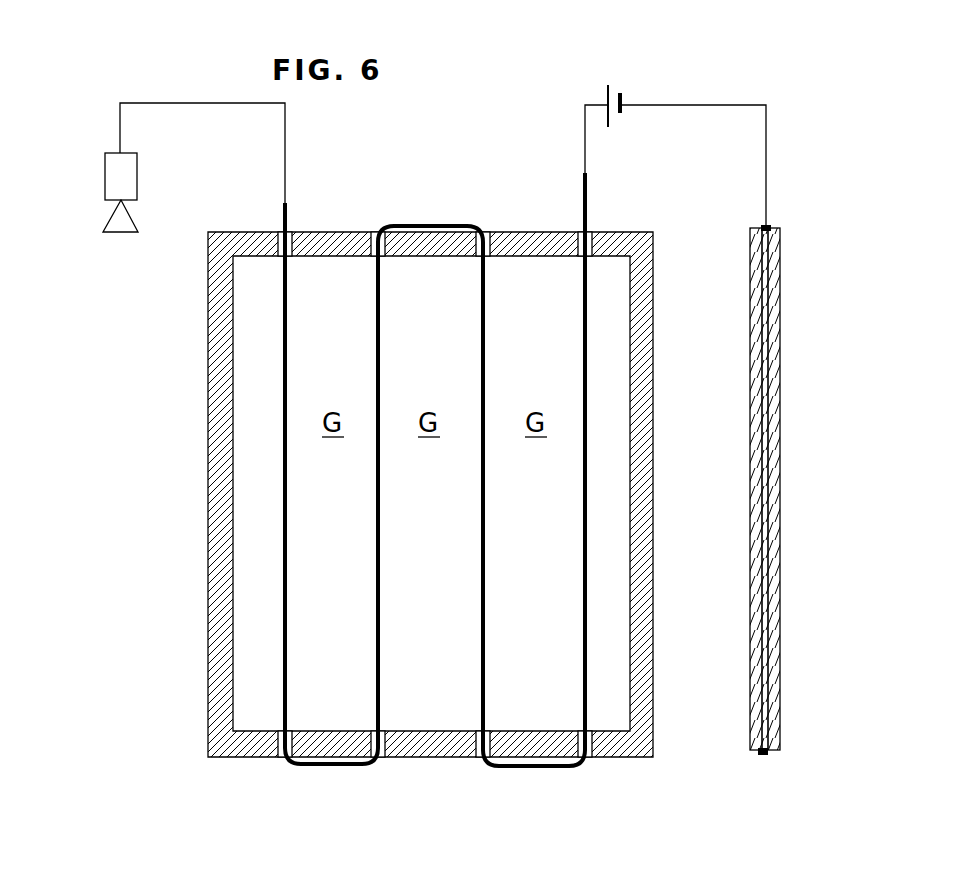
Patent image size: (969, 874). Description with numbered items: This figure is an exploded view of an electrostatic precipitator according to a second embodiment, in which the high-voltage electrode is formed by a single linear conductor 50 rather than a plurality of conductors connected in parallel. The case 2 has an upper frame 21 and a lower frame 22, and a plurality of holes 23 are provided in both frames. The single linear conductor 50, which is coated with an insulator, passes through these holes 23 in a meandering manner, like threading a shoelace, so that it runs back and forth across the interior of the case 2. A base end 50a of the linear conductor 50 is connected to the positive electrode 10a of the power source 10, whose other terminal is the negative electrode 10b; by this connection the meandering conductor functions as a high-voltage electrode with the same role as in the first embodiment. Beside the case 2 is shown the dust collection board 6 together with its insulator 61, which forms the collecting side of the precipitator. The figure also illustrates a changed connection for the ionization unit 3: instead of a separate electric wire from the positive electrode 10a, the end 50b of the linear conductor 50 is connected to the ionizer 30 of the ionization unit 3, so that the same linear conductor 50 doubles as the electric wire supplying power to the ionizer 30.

The case 2 is at (454, 479).
The ionization unit 3 is at (95, 146).
The ionizer 30 is at (137, 153).
The dust collection board 6 is at (783, 396).
The insulator 61 is at (780, 470).
The power source 10 is at (611, 86).
The positive electrode 10a is at (600, 104).
The negative electrode 10b is at (636, 104).
The upper frame 21 is at (345, 231).
The lower frame 22 is at (440, 758).
The hole 23 is at (372, 258).
The linear conductor 50 is at (483, 470).
The base end 50a is at (584, 222).
The end 50b is at (284, 222).